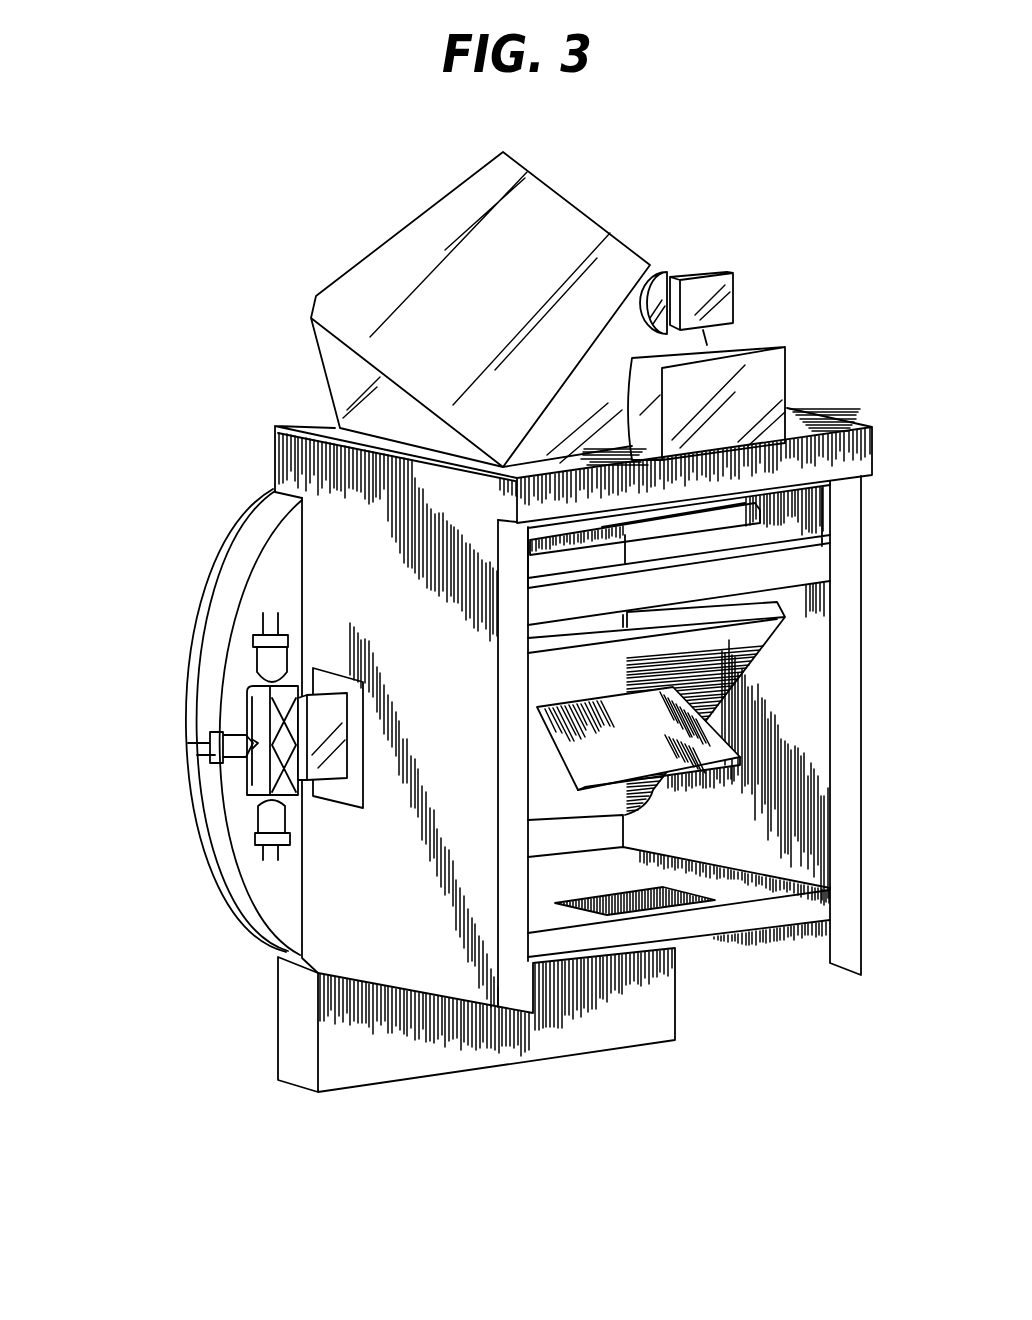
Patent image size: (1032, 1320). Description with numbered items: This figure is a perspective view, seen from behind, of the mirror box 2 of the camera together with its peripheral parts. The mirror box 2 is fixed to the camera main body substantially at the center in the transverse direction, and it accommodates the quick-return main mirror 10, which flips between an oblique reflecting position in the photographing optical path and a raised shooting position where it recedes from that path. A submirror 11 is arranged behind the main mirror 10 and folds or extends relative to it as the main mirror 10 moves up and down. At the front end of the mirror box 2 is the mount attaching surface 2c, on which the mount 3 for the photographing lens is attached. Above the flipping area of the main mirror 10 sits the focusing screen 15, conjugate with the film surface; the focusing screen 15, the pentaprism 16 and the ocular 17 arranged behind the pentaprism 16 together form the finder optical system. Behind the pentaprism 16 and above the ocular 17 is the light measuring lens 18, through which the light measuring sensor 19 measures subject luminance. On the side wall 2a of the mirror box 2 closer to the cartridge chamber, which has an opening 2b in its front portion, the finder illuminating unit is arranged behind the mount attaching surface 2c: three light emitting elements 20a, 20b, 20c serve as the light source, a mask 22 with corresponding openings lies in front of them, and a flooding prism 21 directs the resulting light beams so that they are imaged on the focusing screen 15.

The mirror box 2 is at (865, 452).
The side wall 2a is at (437, 942).
The opening 2b is at (345, 800).
The mount attaching surface 2c is at (198, 839).
The mount 3 is at (213, 566).
The quick-return main mirror 10 is at (732, 635).
The submirror 11 is at (703, 738).
The focusing screen 15 is at (728, 522).
The pentaprism 16 is at (543, 207).
The ocular 17 is at (765, 382).
The light measuring lens 18 is at (635, 270).
The light measuring sensor 19 is at (703, 268).
The light emitting element 20a is at (245, 735).
The light emitting element 20b is at (265, 660).
The light emitting element 20c is at (268, 828).
The flooding prism 21 is at (325, 706).
The mask 22 is at (252, 780).